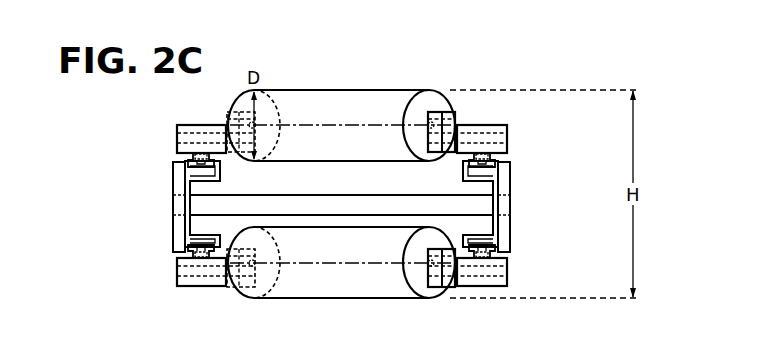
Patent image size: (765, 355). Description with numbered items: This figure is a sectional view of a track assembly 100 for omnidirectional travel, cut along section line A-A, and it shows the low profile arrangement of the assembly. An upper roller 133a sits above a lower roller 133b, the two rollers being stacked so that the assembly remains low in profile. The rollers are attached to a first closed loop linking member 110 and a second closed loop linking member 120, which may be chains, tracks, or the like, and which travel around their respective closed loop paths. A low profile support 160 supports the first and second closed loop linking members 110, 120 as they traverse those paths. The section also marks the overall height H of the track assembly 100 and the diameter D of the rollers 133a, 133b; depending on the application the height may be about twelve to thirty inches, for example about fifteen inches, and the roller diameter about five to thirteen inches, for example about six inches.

The track assembly 100 is at (134, 261).
The first closed loop linking member 110 is at (500, 161).
The second closed loop linking member 120 is at (183, 161).
The upper roller 133a is at (347, 93).
The lower roller 133b is at (347, 293).
The low profile support 160 is at (178, 206).